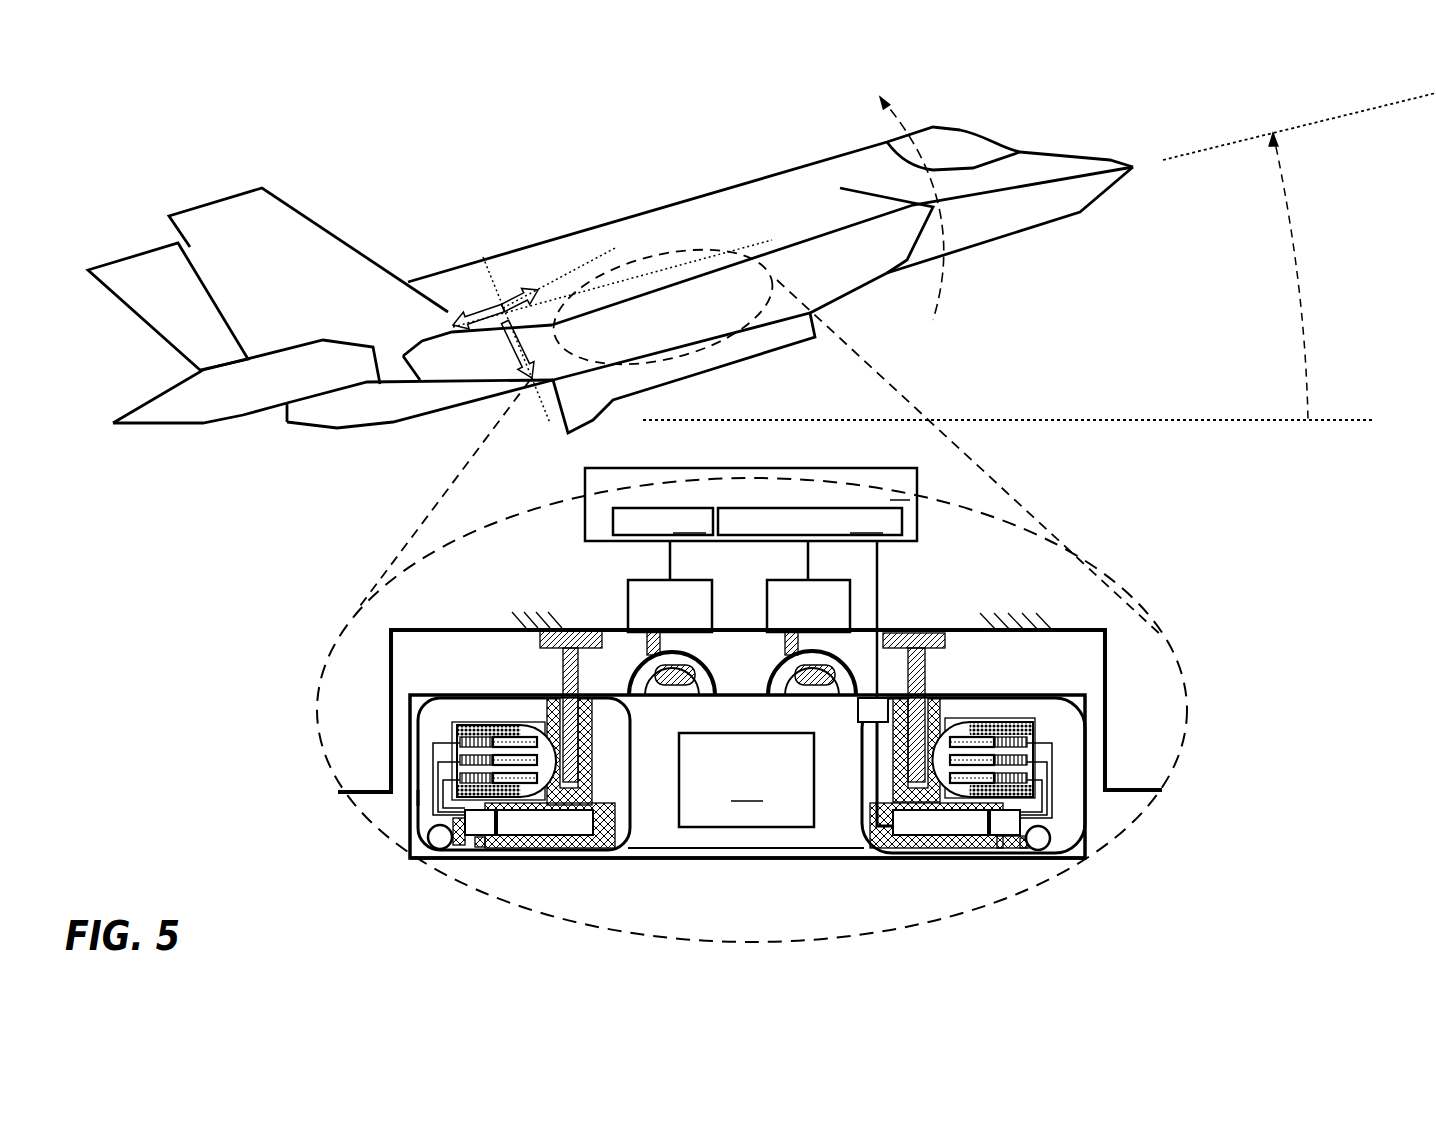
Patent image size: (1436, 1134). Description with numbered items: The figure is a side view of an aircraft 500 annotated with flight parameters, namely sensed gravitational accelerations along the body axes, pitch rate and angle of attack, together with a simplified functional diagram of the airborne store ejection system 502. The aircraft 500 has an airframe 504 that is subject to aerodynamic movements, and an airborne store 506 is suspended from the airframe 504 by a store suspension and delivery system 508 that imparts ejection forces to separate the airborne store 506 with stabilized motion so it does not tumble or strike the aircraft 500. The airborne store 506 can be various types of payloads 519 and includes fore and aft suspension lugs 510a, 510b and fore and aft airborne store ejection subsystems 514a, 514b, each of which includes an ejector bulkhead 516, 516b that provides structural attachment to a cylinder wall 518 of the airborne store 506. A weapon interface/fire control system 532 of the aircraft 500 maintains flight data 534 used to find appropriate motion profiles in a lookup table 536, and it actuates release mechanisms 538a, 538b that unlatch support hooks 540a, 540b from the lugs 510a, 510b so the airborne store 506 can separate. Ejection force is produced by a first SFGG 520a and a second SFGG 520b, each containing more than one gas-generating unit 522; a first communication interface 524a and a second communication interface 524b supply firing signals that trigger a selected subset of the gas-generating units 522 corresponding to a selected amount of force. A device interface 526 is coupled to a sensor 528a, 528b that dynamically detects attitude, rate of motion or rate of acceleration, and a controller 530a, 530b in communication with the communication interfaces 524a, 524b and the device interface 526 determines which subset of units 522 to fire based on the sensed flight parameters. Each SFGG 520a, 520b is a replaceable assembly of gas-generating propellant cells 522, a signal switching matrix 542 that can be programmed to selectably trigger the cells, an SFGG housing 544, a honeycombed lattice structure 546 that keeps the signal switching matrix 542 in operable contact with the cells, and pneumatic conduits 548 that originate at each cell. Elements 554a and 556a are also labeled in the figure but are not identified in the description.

The aircraft 500 is at (743, 182).
The airborne store ejection system 502 is at (402, 632).
The airframe 504 is at (1082, 637).
The airborne store 506 is at (838, 866).
The store suspension and delivery system 508 is at (759, 432).
The fore suspension lug 510a is at (777, 665).
The aft suspension lug 510b is at (707, 668).
The fore airborne store ejection subsystem 514a is at (958, 632).
The aft airborne store ejection subsystem 514b is at (573, 680).
The ejector bulkhead 516 is at (565, 645).
The ejector bulkhead 516b is at (418, 798).
The cylinder wall 518 is at (687, 862).
The payload 519 is at (746, 780).
The first SFGG 520a is at (1033, 730).
The second SFGG 520b is at (452, 723).
The gas-generating unit 522 is at (518, 737).
The first communication interface 524a is at (893, 696).
The second communication interface 524b is at (753, 848).
The device interface 526 is at (482, 842).
The sensor 528a is at (1030, 848).
The sensor 528b is at (457, 848).
The controller 530a is at (903, 850).
The controller 530b is at (580, 848).
The weapon interface/fire control system 532 is at (751, 524).
The flight data 534 is at (810, 521).
The lookup table 536 is at (663, 521).
The release mechanism 538a is at (808, 606).
The release mechanism 538b is at (670, 606).
The support hook 540a is at (798, 645).
The support hook 540b is at (640, 645).
The signal switching matrix 542 is at (470, 738).
The SFGG housing 544 is at (1035, 718).
The honeycombed lattice structure 546 is at (500, 725).
The pneumatic conduit 548 is at (908, 767).
The wiring 554a is at (1072, 806).
The sensor 556a is at (1063, 832).